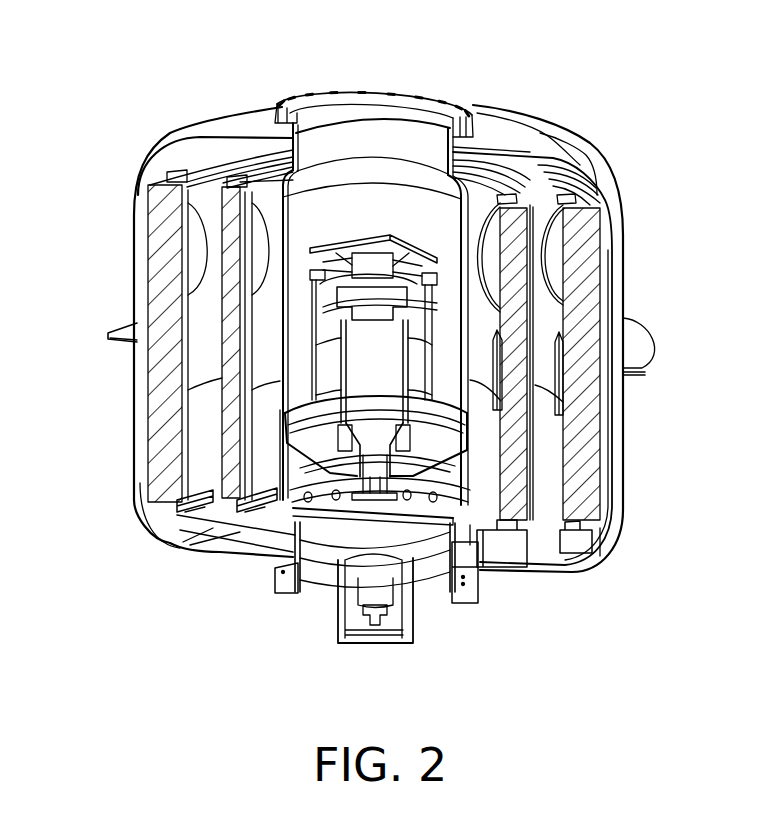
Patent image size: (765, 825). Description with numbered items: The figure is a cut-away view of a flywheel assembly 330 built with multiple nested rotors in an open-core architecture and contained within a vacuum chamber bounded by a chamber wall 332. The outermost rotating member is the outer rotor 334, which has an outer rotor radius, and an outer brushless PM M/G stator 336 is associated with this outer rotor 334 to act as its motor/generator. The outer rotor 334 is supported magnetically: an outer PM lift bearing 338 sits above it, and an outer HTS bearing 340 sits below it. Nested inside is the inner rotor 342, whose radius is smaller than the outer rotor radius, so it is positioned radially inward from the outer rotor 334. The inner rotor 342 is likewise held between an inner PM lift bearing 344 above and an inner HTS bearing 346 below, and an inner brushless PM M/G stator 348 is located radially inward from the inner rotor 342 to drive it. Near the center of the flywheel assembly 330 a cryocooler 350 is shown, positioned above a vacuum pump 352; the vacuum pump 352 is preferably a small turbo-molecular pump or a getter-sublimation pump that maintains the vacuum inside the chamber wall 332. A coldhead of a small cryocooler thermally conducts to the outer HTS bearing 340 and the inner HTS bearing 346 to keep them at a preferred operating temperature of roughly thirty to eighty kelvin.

The flywheel assembly 330 is at (112, 103).
The chamber wall 332 is at (626, 495).
The outer rotor 334 is at (585, 245).
The outer brushless PM M/G stator 336 is at (562, 337).
The outer PM lift bearing 338 is at (580, 163).
The outer HTS bearing 340 is at (582, 523).
The inner rotor 342 is at (233, 240).
The inner PM lift bearing 344 is at (232, 177).
The inner HTS bearing 346 is at (248, 503).
The inner brushless PM M/G stator 348 is at (497, 393).
The cryocooler 350 is at (370, 343).
The vacuum pump 352 is at (362, 568).